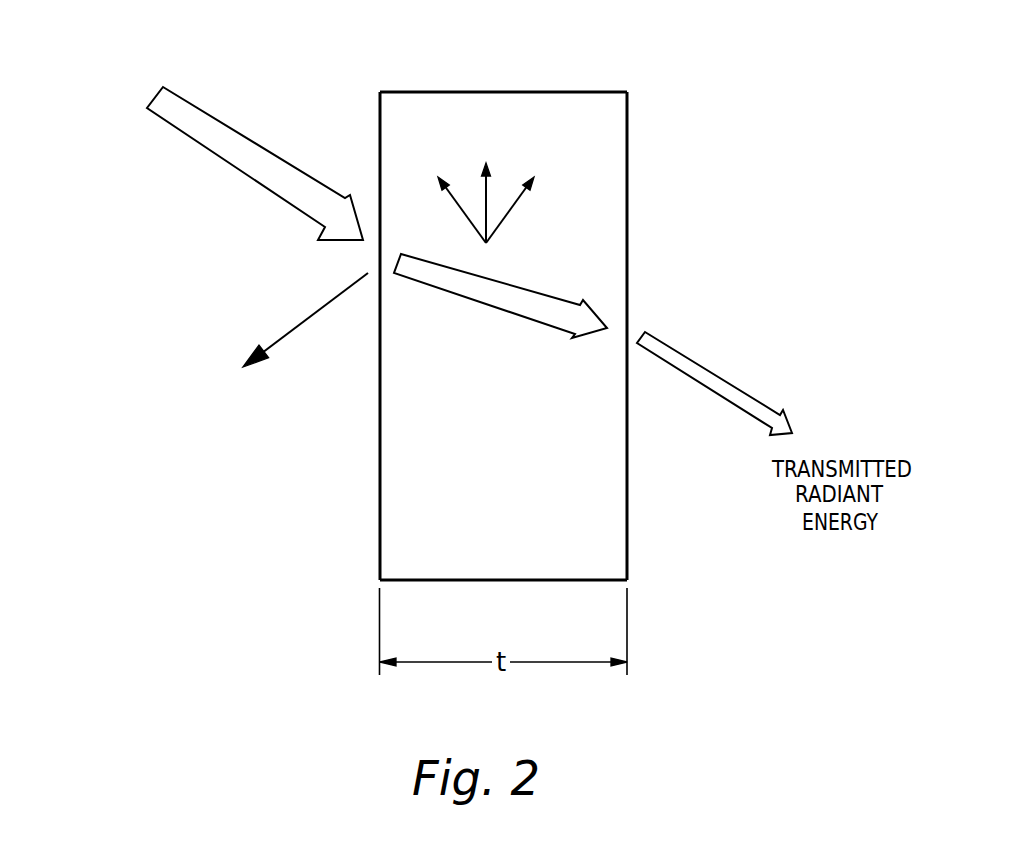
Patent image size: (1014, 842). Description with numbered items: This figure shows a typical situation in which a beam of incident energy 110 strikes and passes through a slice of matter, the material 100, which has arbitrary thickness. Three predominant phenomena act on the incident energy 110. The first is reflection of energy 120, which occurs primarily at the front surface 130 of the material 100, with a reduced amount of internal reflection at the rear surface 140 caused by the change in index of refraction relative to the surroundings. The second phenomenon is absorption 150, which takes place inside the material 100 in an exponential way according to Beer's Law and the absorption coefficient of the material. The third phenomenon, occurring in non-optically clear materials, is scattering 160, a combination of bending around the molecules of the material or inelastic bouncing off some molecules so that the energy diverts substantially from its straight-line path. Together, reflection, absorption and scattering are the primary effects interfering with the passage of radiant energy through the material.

The material 100 is at (486, 88).
The incident energy 110 is at (240, 172).
The reflection of energy 120 is at (302, 321).
The front surface 130 is at (379, 522).
The rear surface 140 is at (627, 551).
The absorption 150 is at (537, 292).
The scattering 160 is at (522, 212).